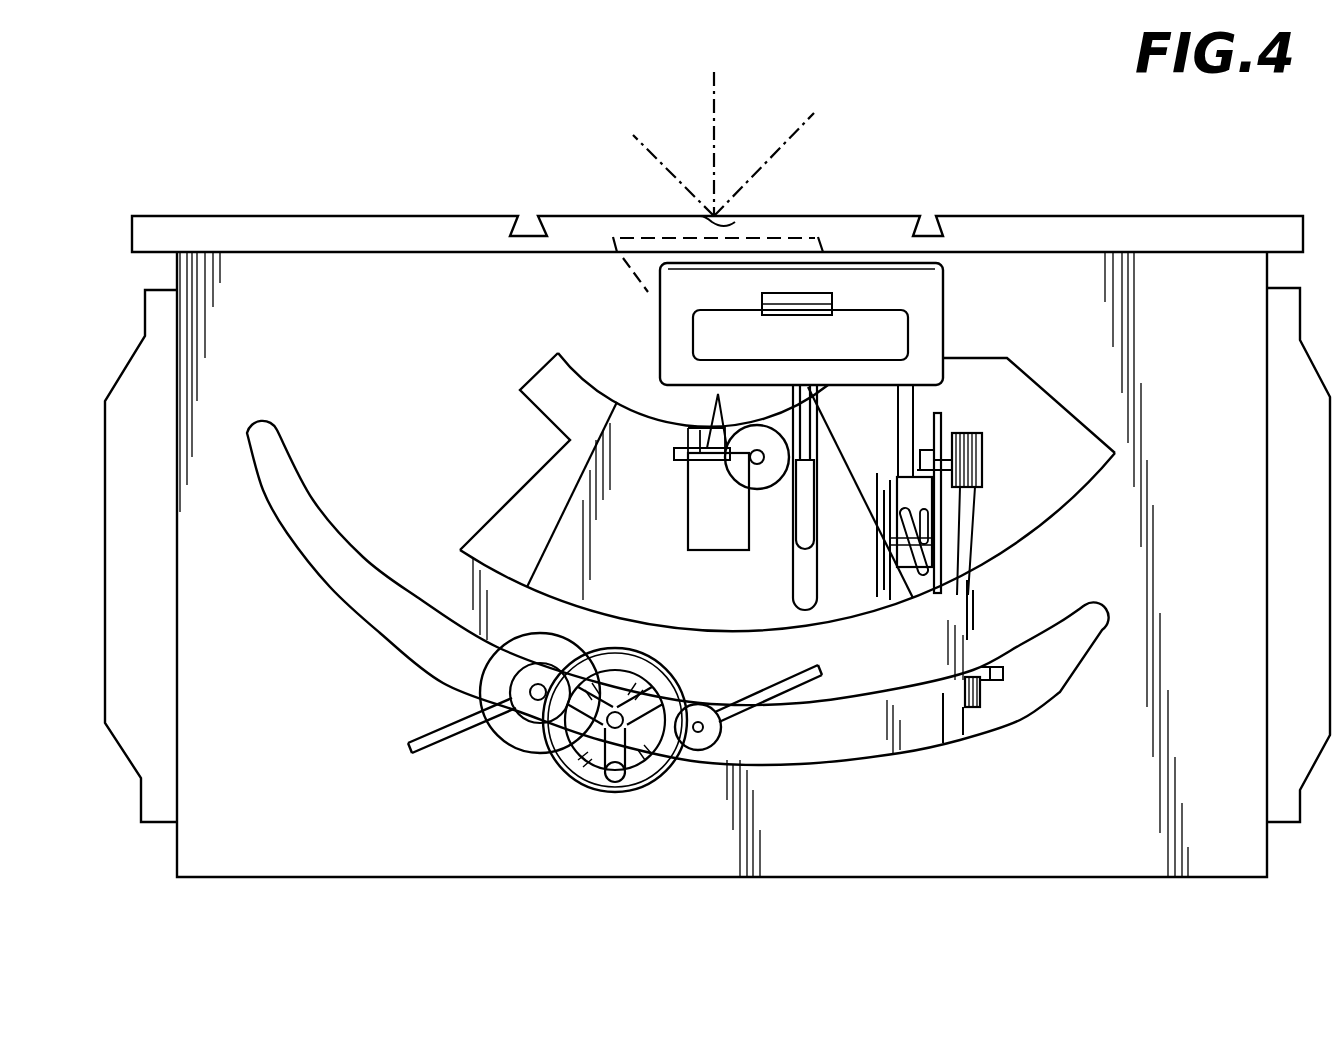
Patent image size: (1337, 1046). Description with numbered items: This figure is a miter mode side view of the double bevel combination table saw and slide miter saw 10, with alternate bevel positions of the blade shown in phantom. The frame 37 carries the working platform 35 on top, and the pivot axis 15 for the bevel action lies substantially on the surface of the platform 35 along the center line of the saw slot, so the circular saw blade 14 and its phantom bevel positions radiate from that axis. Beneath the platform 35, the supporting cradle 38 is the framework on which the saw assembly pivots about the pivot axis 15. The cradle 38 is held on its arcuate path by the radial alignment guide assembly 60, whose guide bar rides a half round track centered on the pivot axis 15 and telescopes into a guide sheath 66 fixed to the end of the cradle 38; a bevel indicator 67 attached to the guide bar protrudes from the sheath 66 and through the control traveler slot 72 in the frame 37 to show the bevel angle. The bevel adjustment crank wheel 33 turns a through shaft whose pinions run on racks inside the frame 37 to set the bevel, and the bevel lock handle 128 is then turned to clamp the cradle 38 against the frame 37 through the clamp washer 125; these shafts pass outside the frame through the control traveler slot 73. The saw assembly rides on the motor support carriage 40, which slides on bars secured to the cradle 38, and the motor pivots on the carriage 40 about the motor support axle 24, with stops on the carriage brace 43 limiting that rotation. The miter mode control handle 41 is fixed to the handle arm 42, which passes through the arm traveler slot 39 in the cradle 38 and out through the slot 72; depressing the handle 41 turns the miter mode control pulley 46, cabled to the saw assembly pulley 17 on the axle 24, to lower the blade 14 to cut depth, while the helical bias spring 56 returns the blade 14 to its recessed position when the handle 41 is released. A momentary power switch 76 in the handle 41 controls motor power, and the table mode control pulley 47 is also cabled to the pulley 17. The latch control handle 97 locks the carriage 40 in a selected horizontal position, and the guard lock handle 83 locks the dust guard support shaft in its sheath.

The double bevel combination table saw and slide miter saw 10 is at (268, 205).
The circular saw blade 14 is at (716, 100).
The pivot axis 15 is at (735, 222).
The saw assembly pulley 17 is at (976, 462).
The motor support axle 24 is at (978, 481).
The bevel adjustment crank wheel 33 is at (590, 776).
The working platform 35 is at (1056, 226).
The frame 37 is at (1223, 310).
The supporting cradle 38 is at (668, 505).
The arm traveler slot 39 is at (812, 598).
The motor support carriage 40 is at (940, 415).
The miter mode control handle 41 is at (910, 306).
The handle arm 42 is at (795, 535).
The carriage brace 43 is at (892, 506).
The miter mode control pulley 46 is at (983, 548).
The table mode control pulley 47 is at (981, 693).
The helical bias spring 56 is at (908, 560).
The radial alignment guide assembly 60 is at (634, 297).
The guide sheath 66 is at (706, 528).
The bevel indicator 67 is at (712, 412).
The control traveler slot 72 is at (1047, 508).
The control traveler slot 73 is at (966, 728).
The momentary power switch 76 is at (808, 318).
The guard lock handle 83 is at (752, 476).
The latch control handle 97 is at (732, 748).
The clamp washer 125 is at (506, 683).
The bevel lock handle 128 is at (467, 735).